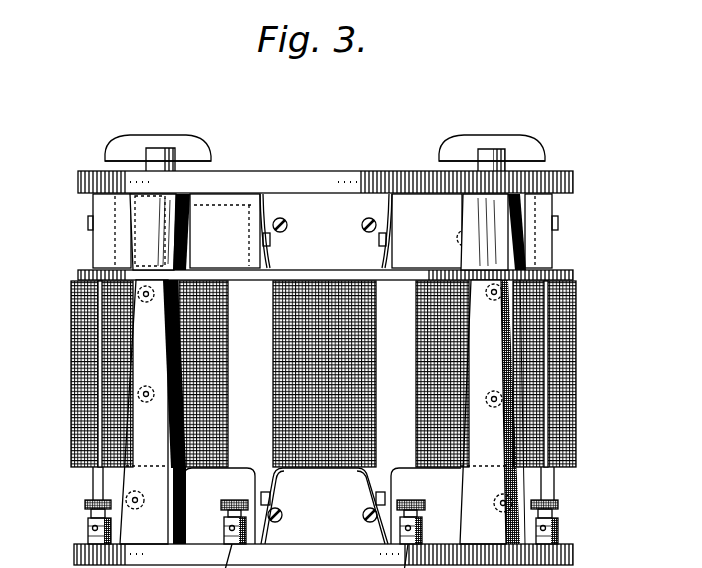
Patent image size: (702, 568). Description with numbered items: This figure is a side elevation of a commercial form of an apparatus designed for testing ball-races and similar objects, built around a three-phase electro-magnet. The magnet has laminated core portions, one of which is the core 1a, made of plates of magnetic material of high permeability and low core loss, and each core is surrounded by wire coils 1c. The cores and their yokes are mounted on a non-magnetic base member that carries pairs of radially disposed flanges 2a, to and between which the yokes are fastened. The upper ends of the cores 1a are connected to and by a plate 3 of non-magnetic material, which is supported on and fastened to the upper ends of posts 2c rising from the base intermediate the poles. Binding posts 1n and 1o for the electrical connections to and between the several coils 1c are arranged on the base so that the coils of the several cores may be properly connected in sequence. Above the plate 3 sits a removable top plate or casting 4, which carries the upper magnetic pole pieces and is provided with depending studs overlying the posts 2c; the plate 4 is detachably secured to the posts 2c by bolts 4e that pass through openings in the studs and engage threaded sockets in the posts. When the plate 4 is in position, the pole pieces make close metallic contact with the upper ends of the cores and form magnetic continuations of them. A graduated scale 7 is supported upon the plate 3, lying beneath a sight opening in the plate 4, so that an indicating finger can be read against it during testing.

The plate 3 is at (74, 262).
The removable top plate 4 is at (236, 174).
The bolts 4e is at (119, 141).
The graduated scale 7 is at (215, 203).
The wire coils 1c is at (63, 358).
The core portion 1a is at (560, 376).
The posts 2c is at (490, 446).
The radially disposed flanges 2a is at (322, 506).
The binding post 1o is at (80, 518).
The binding post 1n is at (550, 522).